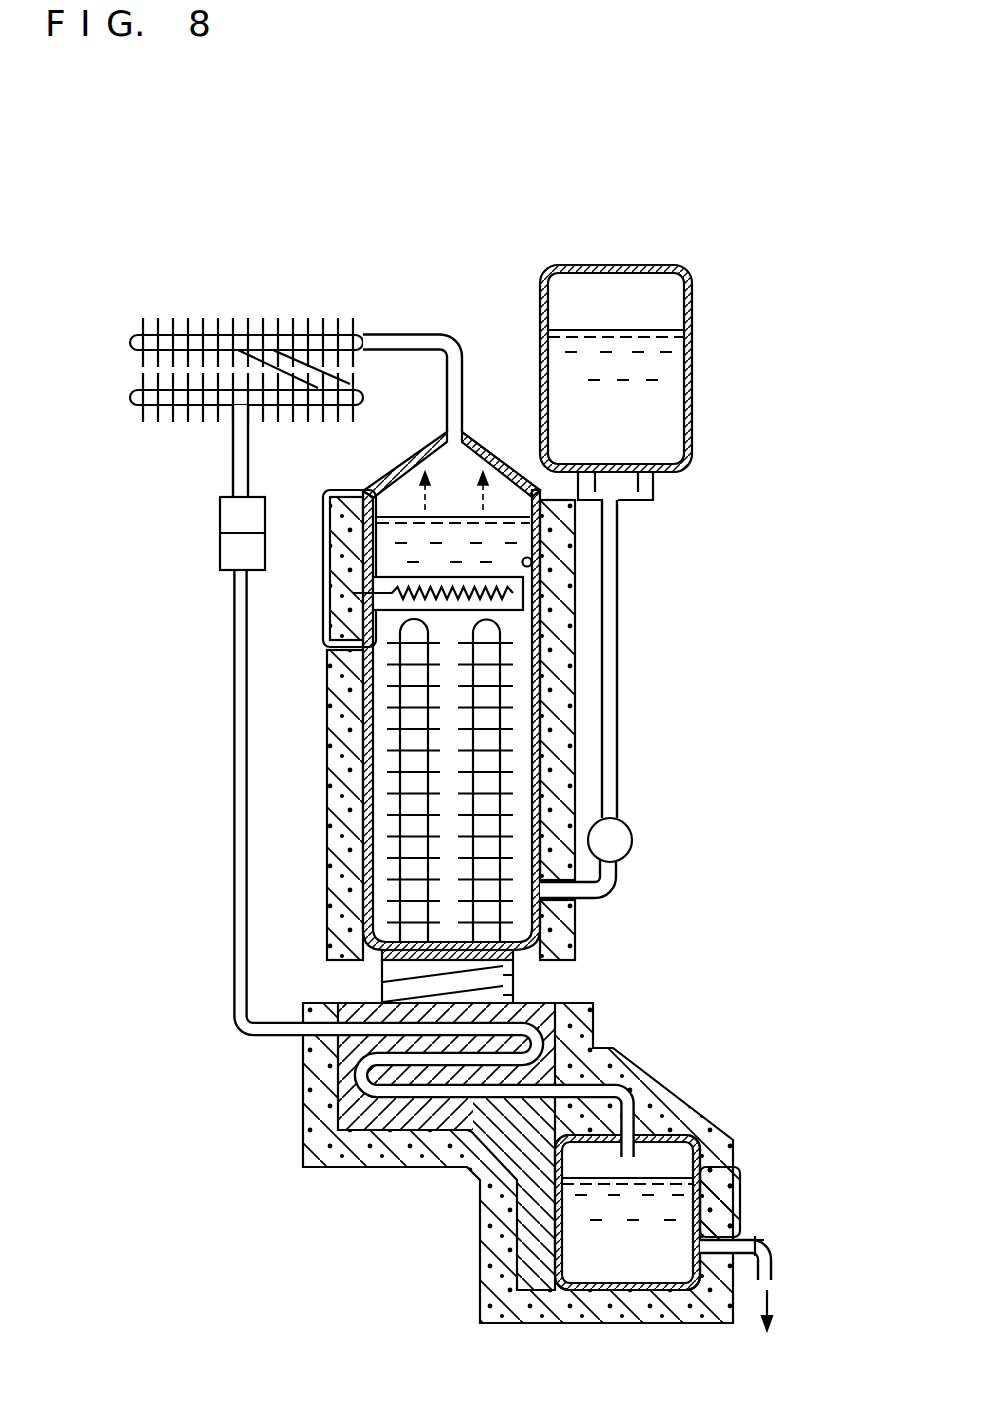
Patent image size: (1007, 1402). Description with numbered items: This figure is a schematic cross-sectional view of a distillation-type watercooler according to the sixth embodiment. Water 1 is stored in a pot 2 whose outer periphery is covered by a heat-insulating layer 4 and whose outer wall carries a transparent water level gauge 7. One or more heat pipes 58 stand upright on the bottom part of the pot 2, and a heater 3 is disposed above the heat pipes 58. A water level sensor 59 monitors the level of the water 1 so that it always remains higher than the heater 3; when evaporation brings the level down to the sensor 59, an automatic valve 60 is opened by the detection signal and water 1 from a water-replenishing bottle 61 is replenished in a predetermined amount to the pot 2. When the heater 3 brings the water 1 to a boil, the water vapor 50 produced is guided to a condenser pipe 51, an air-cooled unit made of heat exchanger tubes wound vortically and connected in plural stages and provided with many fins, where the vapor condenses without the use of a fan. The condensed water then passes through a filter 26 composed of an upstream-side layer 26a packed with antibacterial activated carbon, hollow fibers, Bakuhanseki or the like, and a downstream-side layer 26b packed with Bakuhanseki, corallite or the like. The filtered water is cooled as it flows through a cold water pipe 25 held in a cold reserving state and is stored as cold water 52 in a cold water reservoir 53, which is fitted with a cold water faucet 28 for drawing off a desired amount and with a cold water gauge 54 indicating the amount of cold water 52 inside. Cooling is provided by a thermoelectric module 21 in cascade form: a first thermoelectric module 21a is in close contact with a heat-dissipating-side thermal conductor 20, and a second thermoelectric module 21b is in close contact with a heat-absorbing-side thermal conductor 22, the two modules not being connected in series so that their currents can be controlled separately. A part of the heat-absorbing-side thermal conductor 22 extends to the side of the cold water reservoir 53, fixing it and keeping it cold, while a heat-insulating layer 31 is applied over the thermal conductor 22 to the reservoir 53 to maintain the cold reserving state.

The water 1 is at (650, 428).
The pot 2 is at (548, 680).
The heater 3 is at (523, 599).
The heat-insulating layer 4 is at (560, 726).
The water level gauge 7 is at (325, 566).
The heat-dissipating-side thermal conductor 20 is at (513, 957).
The thermoelectric module 21 is at (577, 968).
The first thermoelectric module 21a is at (513, 967).
The second thermoelectric module 21b is at (513, 987).
The heat-absorbing-side thermal conductor 22 is at (360, 1103).
The cold water pipe 25 is at (397, 1090).
The filter 26 is at (169, 487).
The upstream-side layer 26a is at (235, 511).
The downstream-side layer 26b is at (235, 551).
The cold water faucet 28 is at (764, 1258).
The heat-insulating layer 31 is at (330, 1147).
The water vapor 50 is at (420, 488).
The condenser pipe 51 is at (268, 332).
The cold water 52 is at (650, 1266).
The cold water reservoir 53 is at (556, 1255).
The cold water gauge 54 is at (738, 1197).
The heat pipes 58 is at (487, 784).
The water level sensor 59 is at (533, 564).
The automatic valve 60 is at (618, 837).
The water-replenishing bottle 61 is at (692, 363).